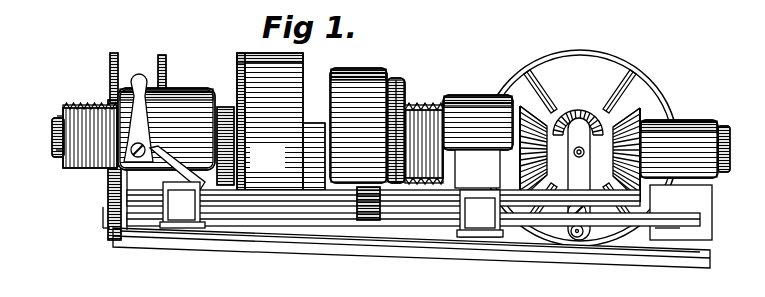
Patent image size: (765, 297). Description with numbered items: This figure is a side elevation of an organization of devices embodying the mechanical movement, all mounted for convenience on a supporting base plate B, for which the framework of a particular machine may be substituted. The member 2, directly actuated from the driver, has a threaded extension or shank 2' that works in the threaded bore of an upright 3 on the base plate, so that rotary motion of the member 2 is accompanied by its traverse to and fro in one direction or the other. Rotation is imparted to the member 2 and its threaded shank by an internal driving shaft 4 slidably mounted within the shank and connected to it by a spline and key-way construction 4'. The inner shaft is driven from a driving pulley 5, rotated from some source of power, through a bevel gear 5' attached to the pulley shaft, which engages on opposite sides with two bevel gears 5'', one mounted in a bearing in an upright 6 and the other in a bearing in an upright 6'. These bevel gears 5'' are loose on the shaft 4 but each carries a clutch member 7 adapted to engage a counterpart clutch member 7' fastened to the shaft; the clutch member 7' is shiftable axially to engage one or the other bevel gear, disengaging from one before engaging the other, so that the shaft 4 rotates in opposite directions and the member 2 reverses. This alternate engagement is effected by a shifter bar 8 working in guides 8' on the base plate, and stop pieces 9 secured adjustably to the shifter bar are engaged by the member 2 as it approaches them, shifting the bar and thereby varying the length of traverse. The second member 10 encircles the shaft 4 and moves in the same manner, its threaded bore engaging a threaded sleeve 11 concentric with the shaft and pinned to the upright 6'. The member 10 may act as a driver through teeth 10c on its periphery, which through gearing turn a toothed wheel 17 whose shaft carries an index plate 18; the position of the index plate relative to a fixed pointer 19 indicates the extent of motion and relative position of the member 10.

The member 2 is at (270, 121).
The threaded extension or shank 2' is at (90, 118).
The upright 3 is at (183, 90).
The internal driving shaft 4 is at (384, 142).
The spline and key-way construction 4' is at (38, 140).
The driving pulley 5 is at (580, 148).
The bevel gear 5' is at (580, 138).
The bevel gears 5'' is at (575, 148).
The upright 6 is at (685, 180).
The upright 6' is at (478, 141).
The clutch member 7 is at (580, 145).
The counterpart clutch member 7' is at (579, 179).
The shifter bar 8 is at (452, 215).
The guides 8' is at (331, 234).
The stop pieces 9 is at (211, 183).
The second member 10 is at (392, 80).
The teeth 10c is at (362, 68).
The threaded sleeve 11 is at (420, 104).
The toothed wheel 17 is at (165, 43).
The index plate 18 is at (113, 55).
The fixed pointer 19 is at (102, 228).
The supporting base plate B is at (411, 260).